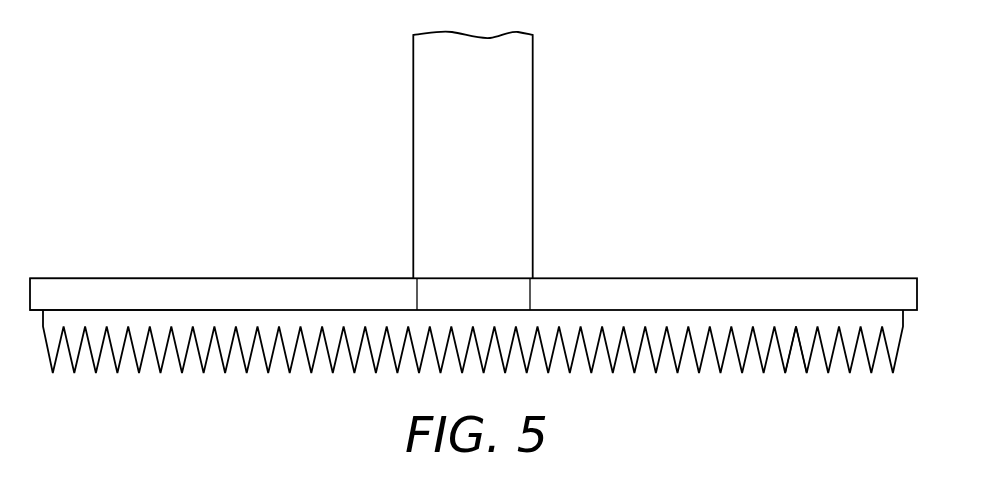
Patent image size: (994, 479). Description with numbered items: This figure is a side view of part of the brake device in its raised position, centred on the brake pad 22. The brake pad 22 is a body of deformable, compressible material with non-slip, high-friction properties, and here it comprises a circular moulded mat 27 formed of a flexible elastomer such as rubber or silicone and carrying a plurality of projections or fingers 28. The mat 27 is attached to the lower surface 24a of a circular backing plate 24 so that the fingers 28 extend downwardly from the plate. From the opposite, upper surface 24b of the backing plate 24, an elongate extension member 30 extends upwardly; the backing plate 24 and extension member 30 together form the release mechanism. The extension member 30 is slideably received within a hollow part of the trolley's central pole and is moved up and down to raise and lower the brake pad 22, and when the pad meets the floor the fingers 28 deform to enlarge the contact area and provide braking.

The brake pad 22 is at (248, 333).
The backing plate 24 is at (345, 294).
The lower surface 24a is at (74, 310).
The upper surface 24b is at (76, 278).
The moulded mat 27 is at (797, 317).
The fingers 28 is at (162, 366).
The extension member 30 is at (523, 82).